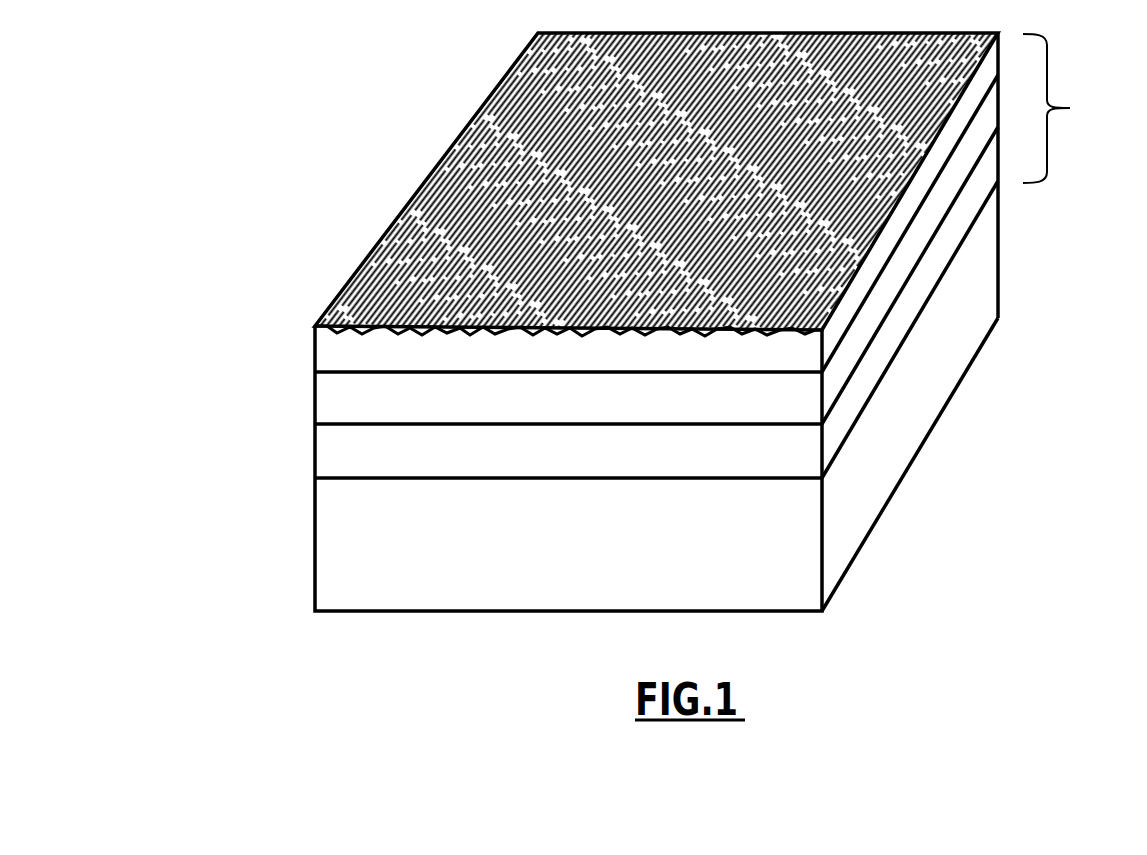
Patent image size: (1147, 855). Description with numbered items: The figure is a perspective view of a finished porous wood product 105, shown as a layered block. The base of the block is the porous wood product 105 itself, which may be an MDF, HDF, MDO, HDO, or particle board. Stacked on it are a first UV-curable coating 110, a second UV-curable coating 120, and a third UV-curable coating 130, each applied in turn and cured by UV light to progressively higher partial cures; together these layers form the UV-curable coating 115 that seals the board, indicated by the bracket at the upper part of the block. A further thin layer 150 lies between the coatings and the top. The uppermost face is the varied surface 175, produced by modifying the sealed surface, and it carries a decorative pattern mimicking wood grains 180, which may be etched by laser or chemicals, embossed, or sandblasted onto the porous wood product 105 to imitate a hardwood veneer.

The porous wood product 105 is at (325, 548).
The first UV-curable coating 110 is at (325, 452).
The second UV-curable coating 120 is at (325, 405).
The third UV-curable coating 130 is at (325, 368).
The top layer 150 is at (325, 352).
The varied surface 175 is at (325, 336).
The wood grains 180 is at (450, 148).
The UV-curable coating 115 is at (1078, 108).